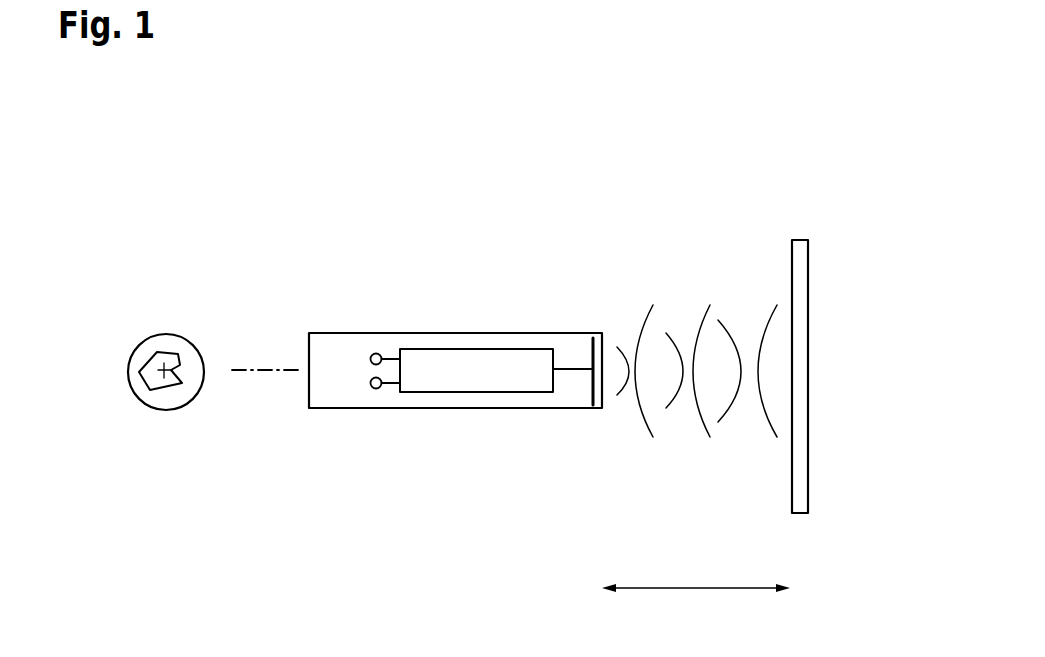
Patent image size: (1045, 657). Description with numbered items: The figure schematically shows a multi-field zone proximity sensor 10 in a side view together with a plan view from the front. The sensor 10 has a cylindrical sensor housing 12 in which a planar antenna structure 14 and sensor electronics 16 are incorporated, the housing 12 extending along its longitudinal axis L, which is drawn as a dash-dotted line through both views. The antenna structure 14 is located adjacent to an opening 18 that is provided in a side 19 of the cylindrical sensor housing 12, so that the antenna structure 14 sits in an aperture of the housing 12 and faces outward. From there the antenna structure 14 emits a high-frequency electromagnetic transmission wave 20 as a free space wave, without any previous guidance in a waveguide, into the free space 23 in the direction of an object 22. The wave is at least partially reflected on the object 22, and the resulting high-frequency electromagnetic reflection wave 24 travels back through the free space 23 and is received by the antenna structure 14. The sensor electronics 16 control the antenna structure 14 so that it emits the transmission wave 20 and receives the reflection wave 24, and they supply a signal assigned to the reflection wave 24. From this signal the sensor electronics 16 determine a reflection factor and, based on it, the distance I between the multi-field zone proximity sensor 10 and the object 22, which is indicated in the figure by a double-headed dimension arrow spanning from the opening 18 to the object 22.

The multi-field zone proximity sensor 10 is at (389, 240).
The cylindrical sensor housing 12 is at (190, 338).
The planar antenna structure 14 is at (160, 396).
The sensor electronics 16 is at (482, 360).
The opening 18 is at (193, 392).
The side 19 is at (601, 340).
The transmission wave 20 is at (730, 333).
The object 22 is at (797, 255).
The free space 23 is at (778, 488).
The reflection wave 24 is at (703, 428).
The longitudinal axis L is at (150, 332).
The distance I is at (696, 573).